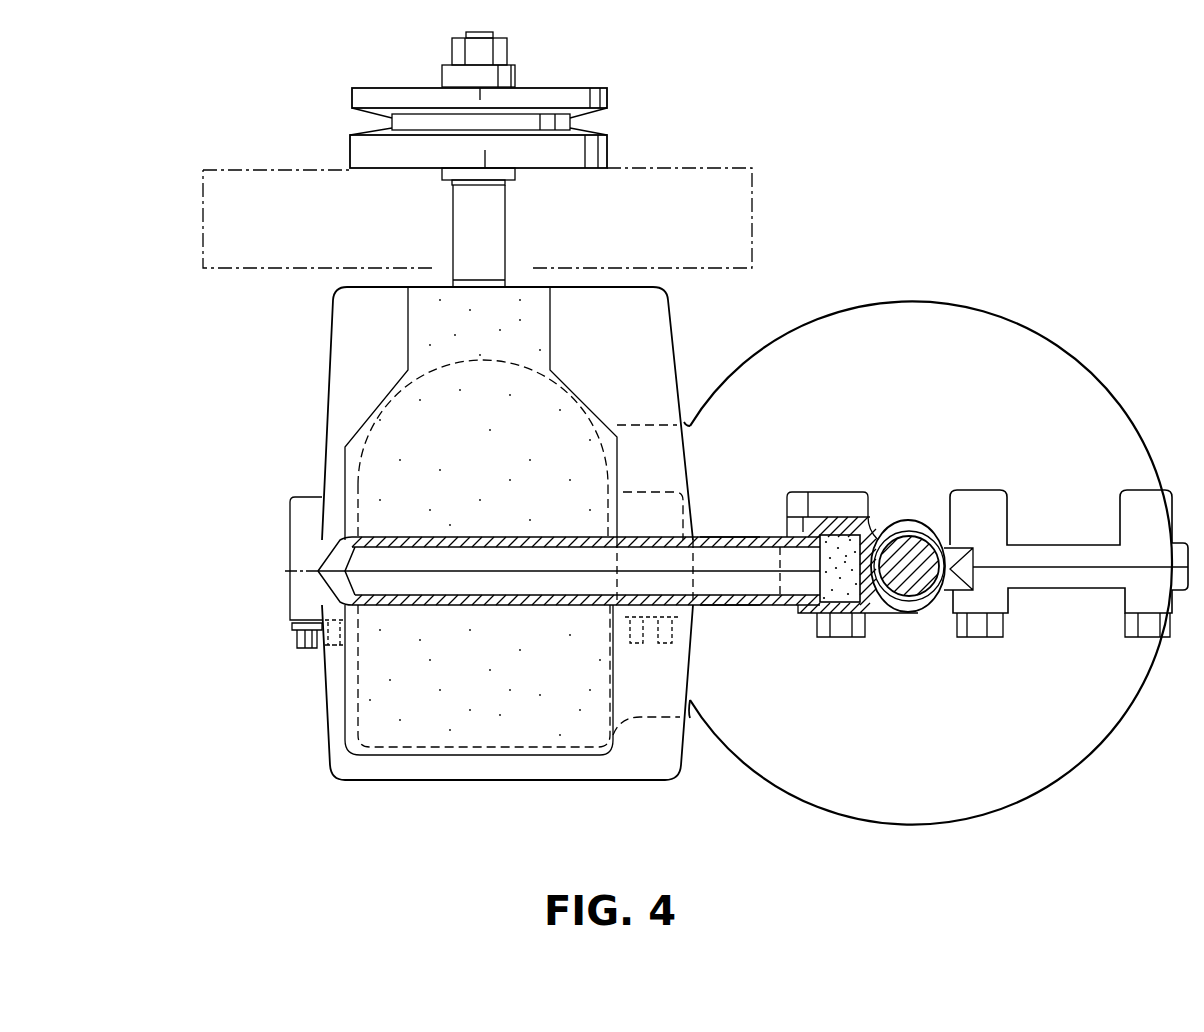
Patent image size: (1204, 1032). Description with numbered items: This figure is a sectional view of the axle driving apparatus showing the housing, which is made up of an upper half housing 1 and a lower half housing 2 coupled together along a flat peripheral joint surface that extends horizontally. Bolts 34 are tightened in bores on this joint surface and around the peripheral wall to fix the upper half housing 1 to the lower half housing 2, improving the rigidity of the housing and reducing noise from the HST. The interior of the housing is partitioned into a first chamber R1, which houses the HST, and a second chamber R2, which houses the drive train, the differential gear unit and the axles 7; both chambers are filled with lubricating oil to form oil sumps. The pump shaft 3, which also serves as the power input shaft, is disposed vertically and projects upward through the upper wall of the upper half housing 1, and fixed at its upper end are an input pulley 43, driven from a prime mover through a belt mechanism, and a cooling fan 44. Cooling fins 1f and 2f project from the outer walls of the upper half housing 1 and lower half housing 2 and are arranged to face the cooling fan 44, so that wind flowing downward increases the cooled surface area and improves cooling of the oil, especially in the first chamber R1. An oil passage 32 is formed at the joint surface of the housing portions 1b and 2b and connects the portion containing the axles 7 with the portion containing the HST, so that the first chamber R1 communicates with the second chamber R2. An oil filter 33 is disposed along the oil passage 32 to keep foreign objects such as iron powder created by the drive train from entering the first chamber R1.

The upper half housing 1 is at (1020, 325).
The housing portion 1b is at (738, 537).
The cooling fins 1f is at (677, 350).
The lower half housing 2 is at (1060, 775).
The housing portion 2b is at (742, 605).
The cooling fins 2f is at (683, 765).
The pump shaft 3 is at (496, 230).
The axles 7 is at (910, 520).
The oil passage 32 is at (415, 560).
The oil filter 33 is at (827, 605).
The bolts 34 is at (305, 648).
The input pulley 43 is at (607, 100).
The cooling fan 44 is at (752, 168).
The first chamber R1 is at (520, 563).
The second chamber R2 is at (868, 545).